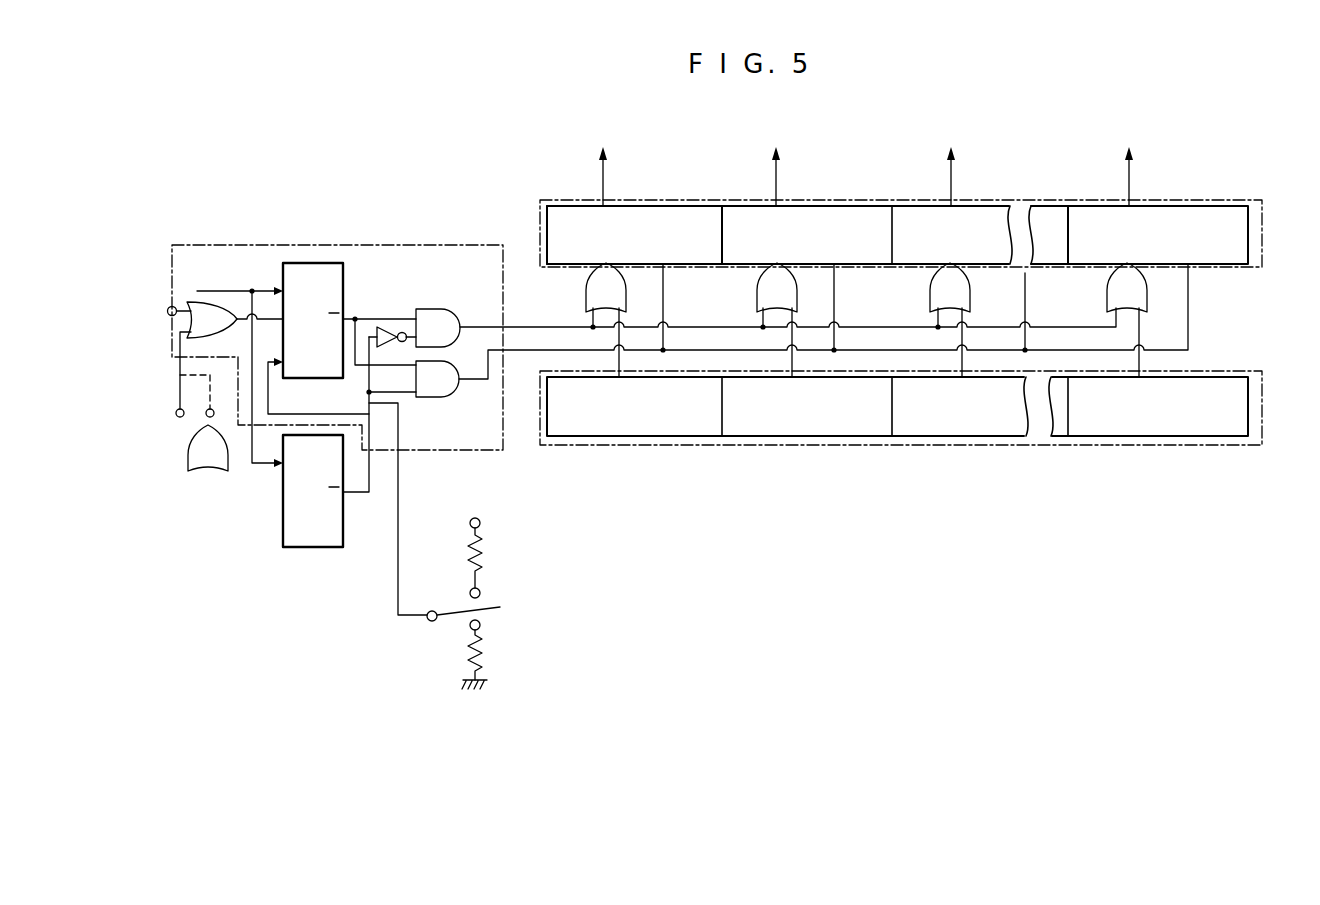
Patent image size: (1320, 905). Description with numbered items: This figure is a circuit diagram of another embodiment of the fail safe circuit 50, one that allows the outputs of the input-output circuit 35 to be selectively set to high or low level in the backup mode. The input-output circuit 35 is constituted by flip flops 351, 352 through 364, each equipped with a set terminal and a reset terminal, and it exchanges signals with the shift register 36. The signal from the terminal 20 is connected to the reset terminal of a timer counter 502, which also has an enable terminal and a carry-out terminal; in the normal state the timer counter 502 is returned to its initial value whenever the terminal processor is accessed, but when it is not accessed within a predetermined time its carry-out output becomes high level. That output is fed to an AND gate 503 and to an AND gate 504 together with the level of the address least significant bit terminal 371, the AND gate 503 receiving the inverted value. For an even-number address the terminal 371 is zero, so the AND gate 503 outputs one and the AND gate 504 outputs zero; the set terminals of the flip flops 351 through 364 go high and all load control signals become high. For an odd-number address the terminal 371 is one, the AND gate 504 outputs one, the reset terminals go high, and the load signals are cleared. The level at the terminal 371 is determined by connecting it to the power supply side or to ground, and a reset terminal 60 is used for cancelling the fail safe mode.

The fail safe circuit 50 is at (341, 246).
The reset terminal 60 is at (189, 344).
The terminal 20 is at (189, 438).
The timer counter 502 is at (366, 291).
The AND gate 503 is at (463, 302).
The AND gate 504 is at (440, 399).
The address least significant bit terminal 371 is at (459, 601).
The flip flop 351 is at (679, 205).
The flip flop 352 is at (855, 205).
The flip flop 364 is at (1215, 205).
The input-output circuit 35 is at (1262, 255).
The shift register 36 is at (1262, 430).